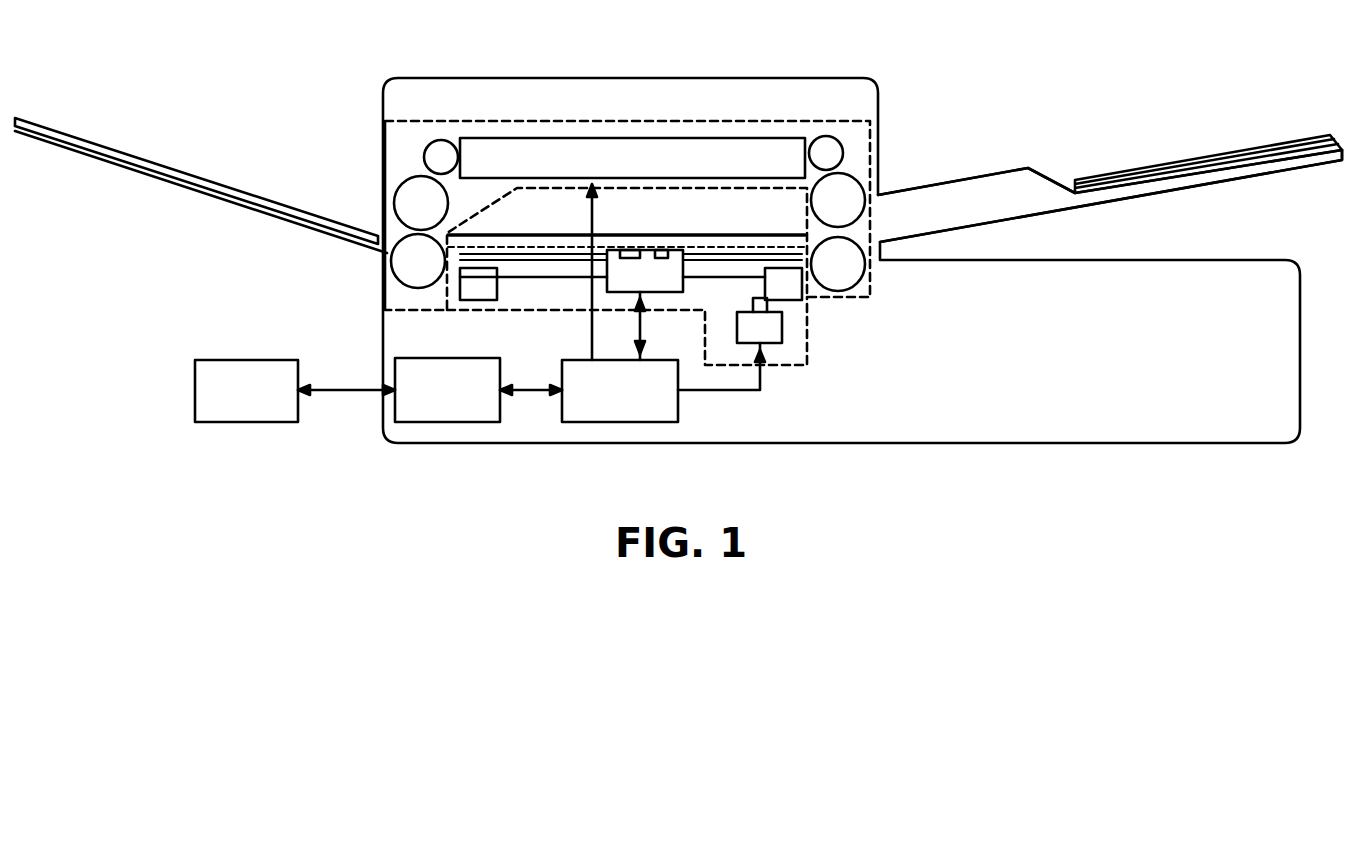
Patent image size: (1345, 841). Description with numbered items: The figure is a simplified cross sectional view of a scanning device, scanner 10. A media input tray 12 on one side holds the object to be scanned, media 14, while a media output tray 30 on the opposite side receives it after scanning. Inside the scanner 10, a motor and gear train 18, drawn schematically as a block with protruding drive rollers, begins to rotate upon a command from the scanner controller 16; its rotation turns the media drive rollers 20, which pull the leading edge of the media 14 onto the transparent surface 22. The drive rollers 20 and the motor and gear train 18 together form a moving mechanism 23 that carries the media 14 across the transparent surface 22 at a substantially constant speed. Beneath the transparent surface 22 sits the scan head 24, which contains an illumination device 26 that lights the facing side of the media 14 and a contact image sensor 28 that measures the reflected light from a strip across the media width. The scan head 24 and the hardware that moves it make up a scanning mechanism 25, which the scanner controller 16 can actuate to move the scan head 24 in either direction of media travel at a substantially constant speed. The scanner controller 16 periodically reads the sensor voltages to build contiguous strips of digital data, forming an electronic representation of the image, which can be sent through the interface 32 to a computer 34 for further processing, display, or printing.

The scanner 10 is at (557, 77).
The media input tray 12 is at (1283, 170).
The media 14 is at (1283, 156).
The scanner controller 16 is at (682, 410).
The motor and gear train 18 is at (680, 137).
The media drive rollers 20 is at (396, 258).
The transparent surface 22 is at (737, 232).
The moving mechanism 23 is at (770, 118).
The scan head 24 is at (685, 288).
The scanning mechanism 25 is at (810, 322).
The illumination device 26 is at (632, 250).
The contact image sensor 28 is at (661, 250).
The media output tray 30 is at (95, 150).
The interface 32 is at (500, 362).
The computer 34 is at (248, 422).